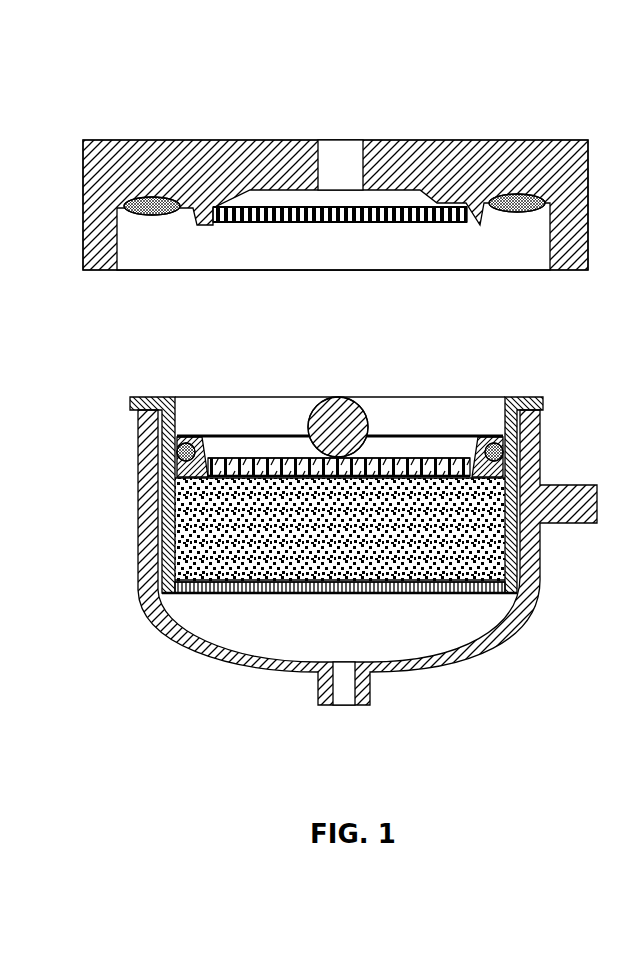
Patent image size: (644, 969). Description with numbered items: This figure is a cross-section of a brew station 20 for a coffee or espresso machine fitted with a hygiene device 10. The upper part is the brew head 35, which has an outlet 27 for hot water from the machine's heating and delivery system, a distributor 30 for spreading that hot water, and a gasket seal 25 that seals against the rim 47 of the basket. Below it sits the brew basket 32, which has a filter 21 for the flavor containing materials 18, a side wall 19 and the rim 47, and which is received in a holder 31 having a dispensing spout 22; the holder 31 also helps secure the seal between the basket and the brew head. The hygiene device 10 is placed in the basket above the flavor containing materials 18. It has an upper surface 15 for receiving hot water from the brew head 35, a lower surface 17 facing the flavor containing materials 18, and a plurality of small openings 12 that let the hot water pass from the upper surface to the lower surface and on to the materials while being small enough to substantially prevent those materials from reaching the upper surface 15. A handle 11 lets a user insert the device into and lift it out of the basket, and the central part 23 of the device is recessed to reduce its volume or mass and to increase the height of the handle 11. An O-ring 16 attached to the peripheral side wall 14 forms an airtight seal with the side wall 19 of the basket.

The hygiene device 10 is at (296, 428).
The handle 11 is at (333, 400).
The small openings 12 is at (424, 457).
The peripheral side wall 14 is at (192, 472).
The upper surface 15 is at (243, 458).
The O-ring 16 is at (185, 440).
The lower surface 17 is at (212, 481).
The flavor containing materials 18 is at (200, 524).
The side wall 19 is at (180, 574).
The brew station 20 is at (335, 164).
The filter 21 is at (314, 594).
The dispensing spout 22 is at (344, 690).
The central part 23 is at (393, 447).
The gasket seal 25 is at (165, 213).
The outlet 27 is at (336, 140).
The distributor 30 is at (412, 222).
The holder 31 is at (367, 563).
The brew basket 32 is at (200, 605).
The brew head 35 is at (512, 137).
The rim 47 is at (538, 397).